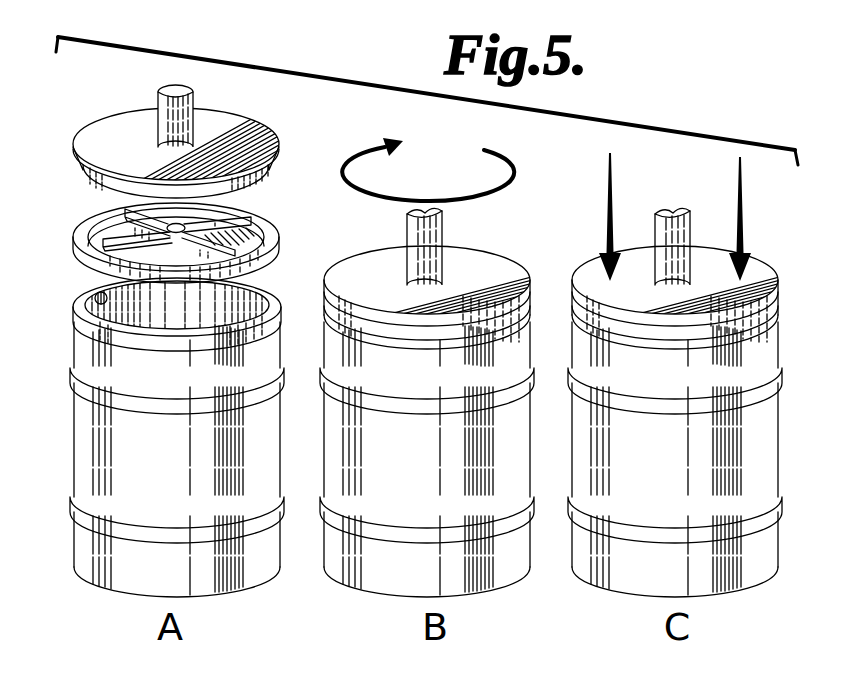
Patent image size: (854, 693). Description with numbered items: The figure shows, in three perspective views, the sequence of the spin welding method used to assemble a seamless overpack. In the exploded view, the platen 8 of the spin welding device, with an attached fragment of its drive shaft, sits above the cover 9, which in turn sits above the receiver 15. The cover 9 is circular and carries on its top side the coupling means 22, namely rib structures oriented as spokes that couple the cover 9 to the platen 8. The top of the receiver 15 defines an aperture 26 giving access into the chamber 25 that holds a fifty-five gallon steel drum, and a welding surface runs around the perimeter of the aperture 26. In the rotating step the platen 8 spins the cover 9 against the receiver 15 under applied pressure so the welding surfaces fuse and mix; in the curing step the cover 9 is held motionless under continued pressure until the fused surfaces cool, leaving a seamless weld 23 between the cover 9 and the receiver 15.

In FIG. 5A, the platen 8 is at (228, 118).
In FIG. 5A, the cover 9 is at (270, 224).
In FIG. 5A, the coupling means 22 is at (120, 214).
In FIG. 5A, the chamber 25 is at (248, 297).
In FIG. 5A, the aperture 26 is at (95, 291).
In FIG. 5A, the receiver 15 is at (166, 427).
In FIG. 5C, the weld 23 is at (574, 303).